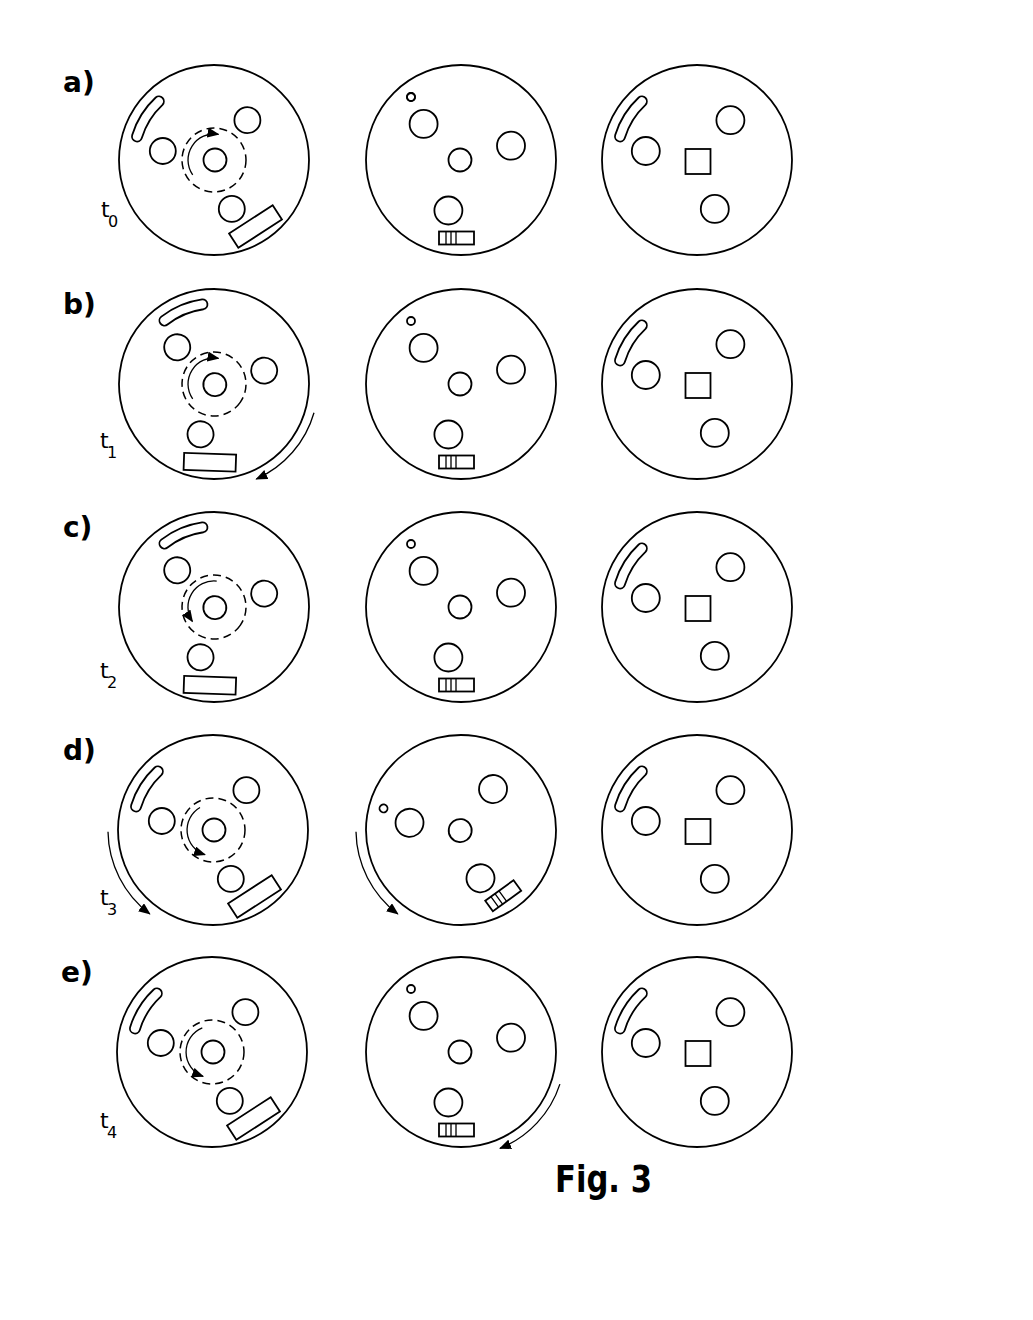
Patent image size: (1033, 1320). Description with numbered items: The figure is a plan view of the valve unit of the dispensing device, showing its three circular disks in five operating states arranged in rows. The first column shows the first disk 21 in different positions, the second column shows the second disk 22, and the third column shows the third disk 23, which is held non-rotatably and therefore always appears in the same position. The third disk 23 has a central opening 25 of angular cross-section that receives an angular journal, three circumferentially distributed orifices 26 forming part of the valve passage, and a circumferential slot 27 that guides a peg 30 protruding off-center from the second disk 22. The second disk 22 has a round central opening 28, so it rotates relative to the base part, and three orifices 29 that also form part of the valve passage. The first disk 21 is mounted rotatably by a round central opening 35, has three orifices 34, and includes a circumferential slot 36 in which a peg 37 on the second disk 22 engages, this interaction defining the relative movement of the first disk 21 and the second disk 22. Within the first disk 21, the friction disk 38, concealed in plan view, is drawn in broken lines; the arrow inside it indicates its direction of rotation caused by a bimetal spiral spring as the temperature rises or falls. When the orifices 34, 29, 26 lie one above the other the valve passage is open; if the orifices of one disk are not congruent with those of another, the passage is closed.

The first disk 21 is at (255, 63).
The second disk 22 is at (499, 65).
The third disk 23 is at (749, 67).
The central opening 25 is at (706, 158).
The orifices 26 is at (657, 146).
The slot 27 is at (633, 100).
The central opening 28 is at (466, 160).
The orifices 29 is at (434, 118).
The peg 30 is at (412, 92).
The peg 37 is at (411, 97).
The orifices 34 is at (259, 119).
The central opening 35 is at (222, 158).
The slot 36 is at (151, 100).
The friction disk 38 is at (212, 196).